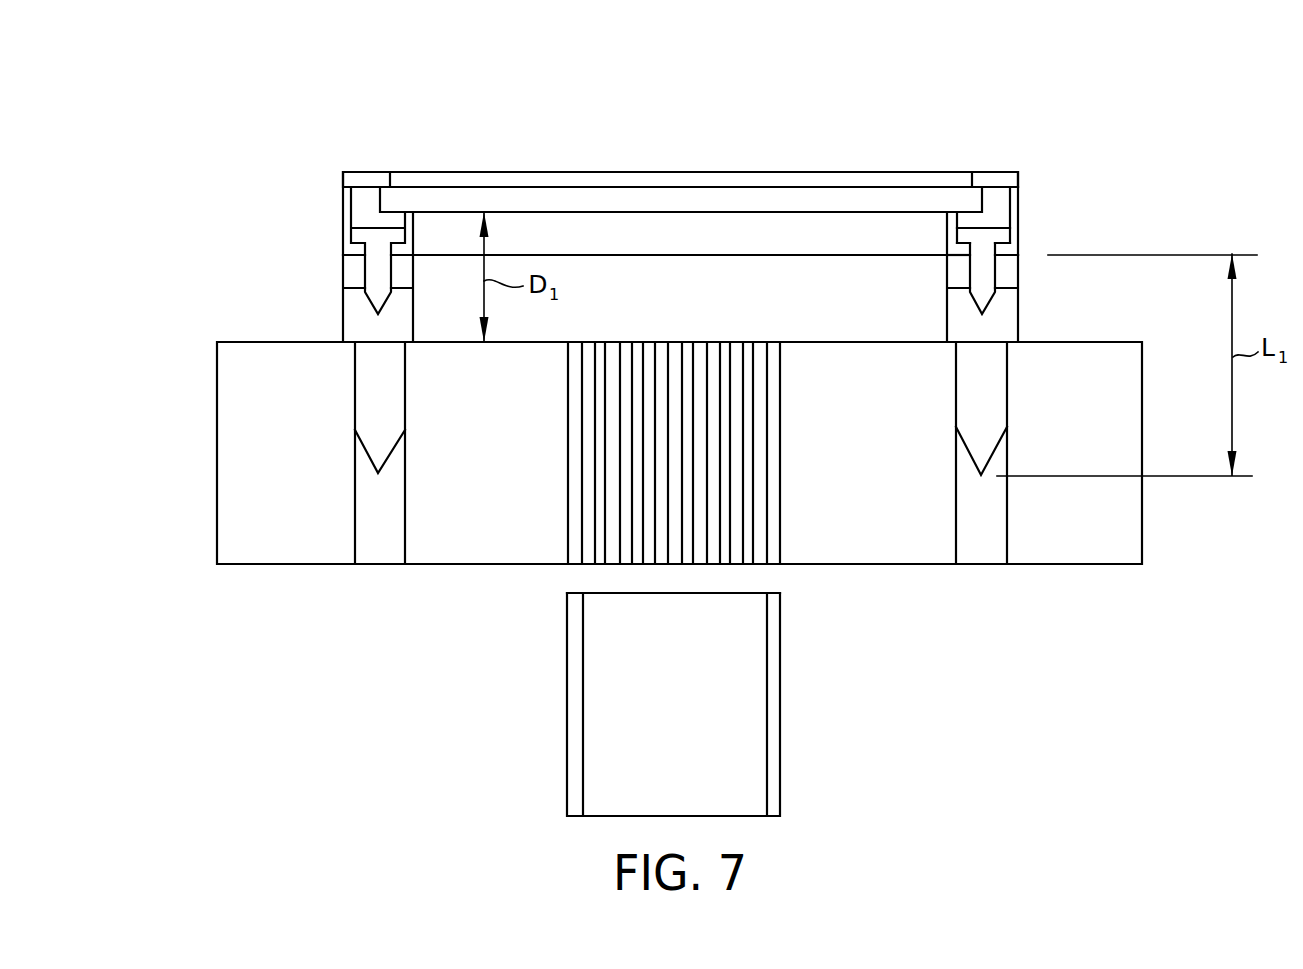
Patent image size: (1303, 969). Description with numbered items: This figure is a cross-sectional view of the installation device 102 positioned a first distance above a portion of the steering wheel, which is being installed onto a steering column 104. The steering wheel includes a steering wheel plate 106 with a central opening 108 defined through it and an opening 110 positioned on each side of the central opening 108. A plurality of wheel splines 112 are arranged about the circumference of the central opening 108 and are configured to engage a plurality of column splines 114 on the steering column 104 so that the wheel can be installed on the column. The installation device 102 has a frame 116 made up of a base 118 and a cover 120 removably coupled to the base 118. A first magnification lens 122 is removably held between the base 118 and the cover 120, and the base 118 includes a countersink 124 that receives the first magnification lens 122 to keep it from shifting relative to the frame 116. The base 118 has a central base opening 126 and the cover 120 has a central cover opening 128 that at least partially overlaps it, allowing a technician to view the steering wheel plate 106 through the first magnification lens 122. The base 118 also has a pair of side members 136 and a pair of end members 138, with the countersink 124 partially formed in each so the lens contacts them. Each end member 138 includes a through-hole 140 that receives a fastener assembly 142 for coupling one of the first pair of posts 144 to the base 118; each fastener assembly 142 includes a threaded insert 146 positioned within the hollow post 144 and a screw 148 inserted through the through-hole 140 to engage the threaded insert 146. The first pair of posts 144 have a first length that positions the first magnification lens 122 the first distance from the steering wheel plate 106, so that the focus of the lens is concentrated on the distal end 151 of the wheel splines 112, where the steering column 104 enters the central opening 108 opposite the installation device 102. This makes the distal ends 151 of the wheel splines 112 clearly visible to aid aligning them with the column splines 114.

The installation device 102 is at (305, 122).
The steering column 104 is at (745, 665).
The steering wheel plate 106 is at (1120, 540).
The central opening 108 is at (575, 578).
The opening 110 is at (382, 553).
The wheel splines 112 is at (738, 352).
The column splines 114 is at (777, 752).
The frame 116 is at (295, 172).
The base 118 is at (343, 215).
The cover 120 is at (367, 178).
The first magnification lens 122 is at (517, 200).
The countersink 124 is at (980, 198).
The central base opening 126 is at (417, 237).
The central cover opening 128 is at (970, 180).
The side members 136 is at (572, 247).
The end members 138 is at (1020, 197).
The through-hole 140 is at (365, 244).
The fastener assembly 142 is at (1035, 243).
The first pair of posts 144 is at (377, 420).
The threaded insert 146 is at (955, 268).
The screw 148 is at (970, 237).
The distal end 151 is at (763, 581).